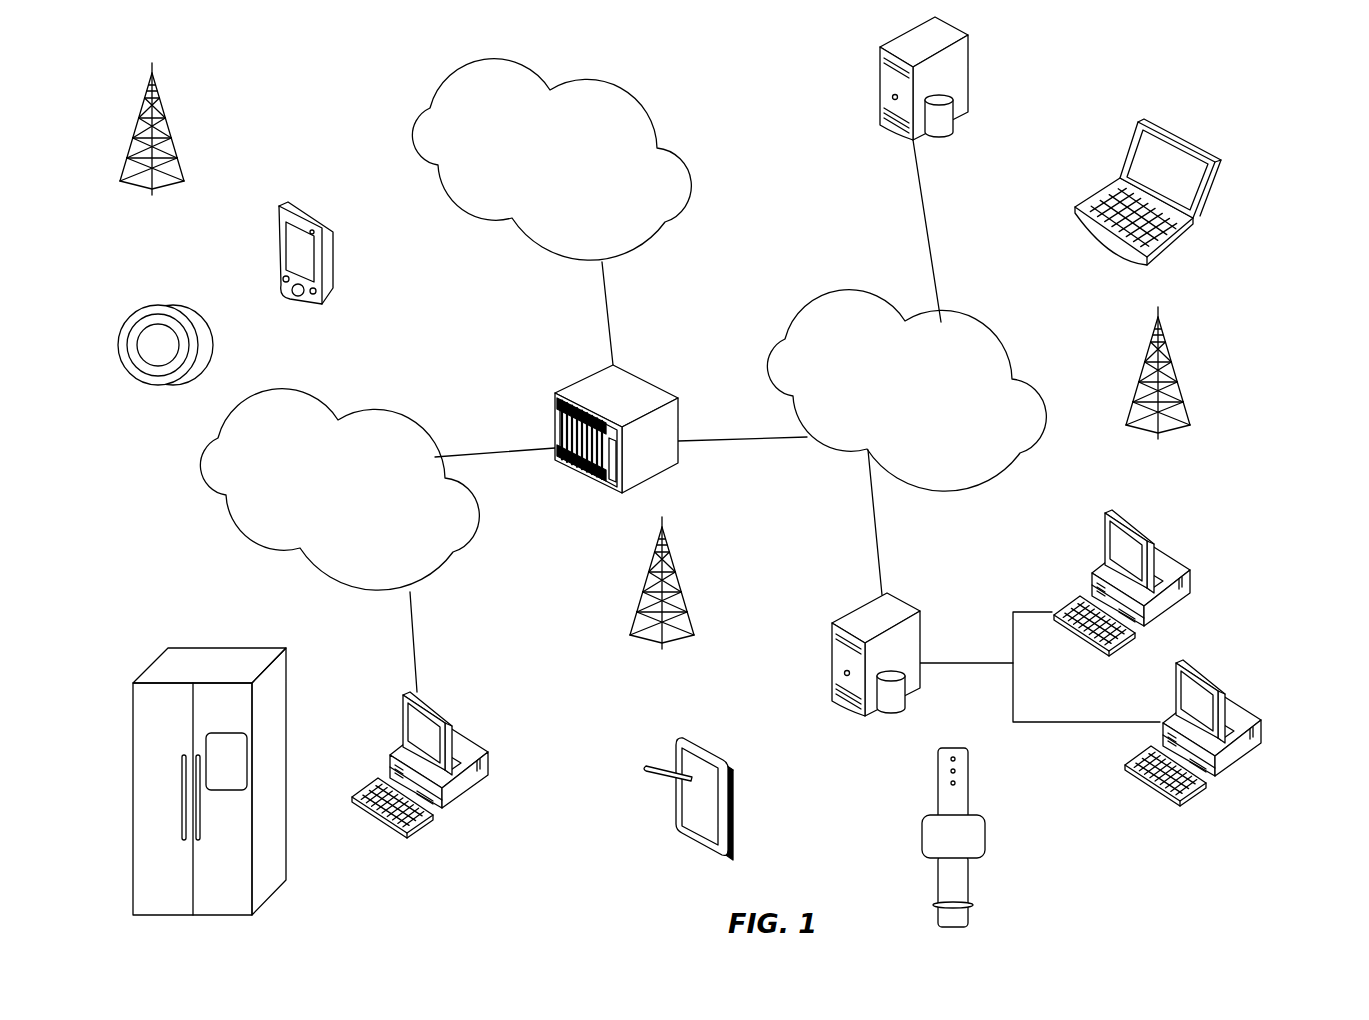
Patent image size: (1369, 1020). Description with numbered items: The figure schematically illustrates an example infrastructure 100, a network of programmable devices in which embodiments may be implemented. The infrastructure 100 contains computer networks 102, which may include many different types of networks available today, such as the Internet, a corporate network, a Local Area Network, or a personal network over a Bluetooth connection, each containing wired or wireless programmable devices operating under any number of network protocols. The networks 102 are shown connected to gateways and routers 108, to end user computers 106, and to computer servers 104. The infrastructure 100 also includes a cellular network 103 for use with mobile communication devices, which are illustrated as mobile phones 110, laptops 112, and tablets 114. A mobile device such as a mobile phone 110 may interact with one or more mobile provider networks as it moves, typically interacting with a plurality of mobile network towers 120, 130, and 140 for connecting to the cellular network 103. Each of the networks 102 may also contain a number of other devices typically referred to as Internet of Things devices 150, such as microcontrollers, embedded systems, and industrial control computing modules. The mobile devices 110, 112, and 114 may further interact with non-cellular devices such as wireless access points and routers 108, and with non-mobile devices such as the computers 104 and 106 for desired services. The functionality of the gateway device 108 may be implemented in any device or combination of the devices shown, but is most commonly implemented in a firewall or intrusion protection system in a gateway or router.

The infrastructure 100 is at (1058, 110).
The computer networks 102 is at (646, 440).
The cellular network 103 is at (552, 155).
The computer servers 104 is at (845, 366).
The end user computers 106 is at (850, 658).
The gateways and routers 108 is at (644, 413).
The mobile phones 110 is at (343, 233).
The laptops 112 is at (1176, 186).
The tablets 114 is at (724, 784).
The mobile network tower 120 is at (662, 598).
The mobile network tower 130 is at (1158, 388).
The mobile network tower 140 is at (152, 144).
The Internet of Things devices 150 is at (596, 591).